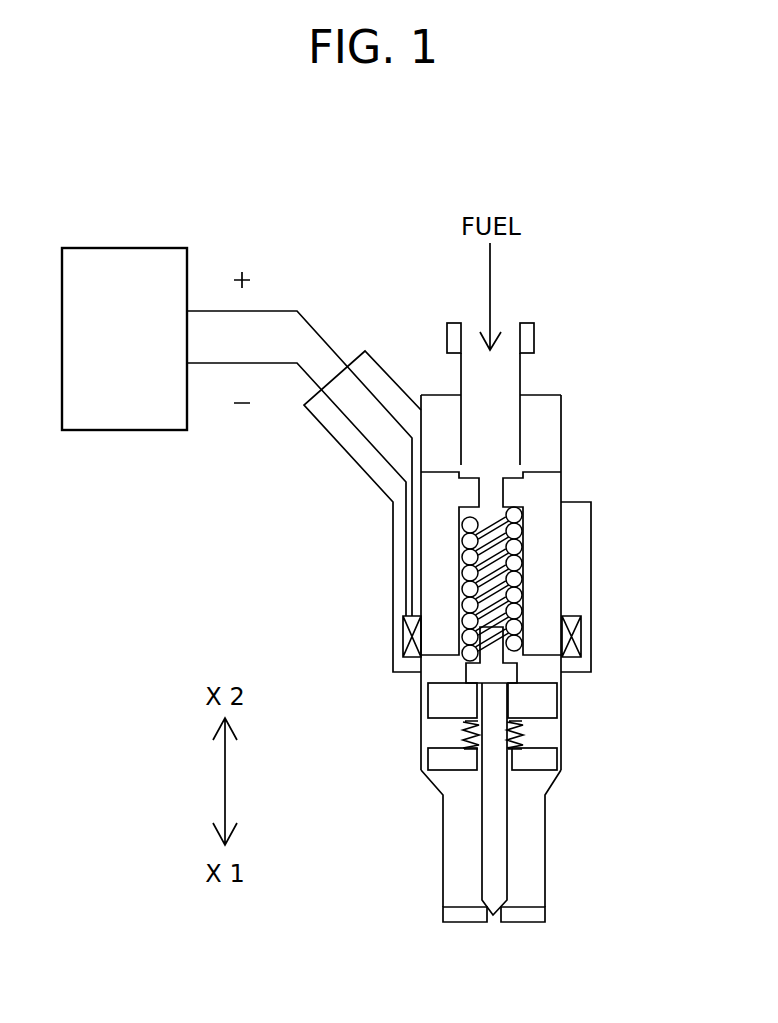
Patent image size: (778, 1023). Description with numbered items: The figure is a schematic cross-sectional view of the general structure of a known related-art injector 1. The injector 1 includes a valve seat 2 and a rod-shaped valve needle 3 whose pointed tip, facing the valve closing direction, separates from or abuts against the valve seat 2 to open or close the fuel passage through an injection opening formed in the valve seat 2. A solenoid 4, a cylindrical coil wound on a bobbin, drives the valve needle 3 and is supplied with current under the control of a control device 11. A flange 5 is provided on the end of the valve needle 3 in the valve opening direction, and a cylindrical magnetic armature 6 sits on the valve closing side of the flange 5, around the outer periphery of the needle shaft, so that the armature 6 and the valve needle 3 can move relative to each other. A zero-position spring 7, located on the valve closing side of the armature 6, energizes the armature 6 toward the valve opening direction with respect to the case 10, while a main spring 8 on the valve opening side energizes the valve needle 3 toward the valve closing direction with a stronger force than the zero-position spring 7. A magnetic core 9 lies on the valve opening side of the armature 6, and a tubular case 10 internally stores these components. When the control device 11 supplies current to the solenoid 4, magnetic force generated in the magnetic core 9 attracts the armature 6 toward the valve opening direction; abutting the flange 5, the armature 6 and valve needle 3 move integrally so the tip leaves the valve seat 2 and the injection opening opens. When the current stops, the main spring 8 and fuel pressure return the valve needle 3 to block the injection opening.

The injector 1 is at (597, 403).
The valve seat 2 is at (522, 917).
The valve needle 3 is at (493, 852).
The solenoid 4 is at (575, 608).
The flange 5 is at (508, 674).
The armature 6 is at (542, 705).
The zero-position spring 7 is at (468, 742).
The main spring 8 is at (513, 567).
The magnetic core 9 is at (552, 497).
The case 10 is at (547, 817).
The control device 11 is at (135, 430).